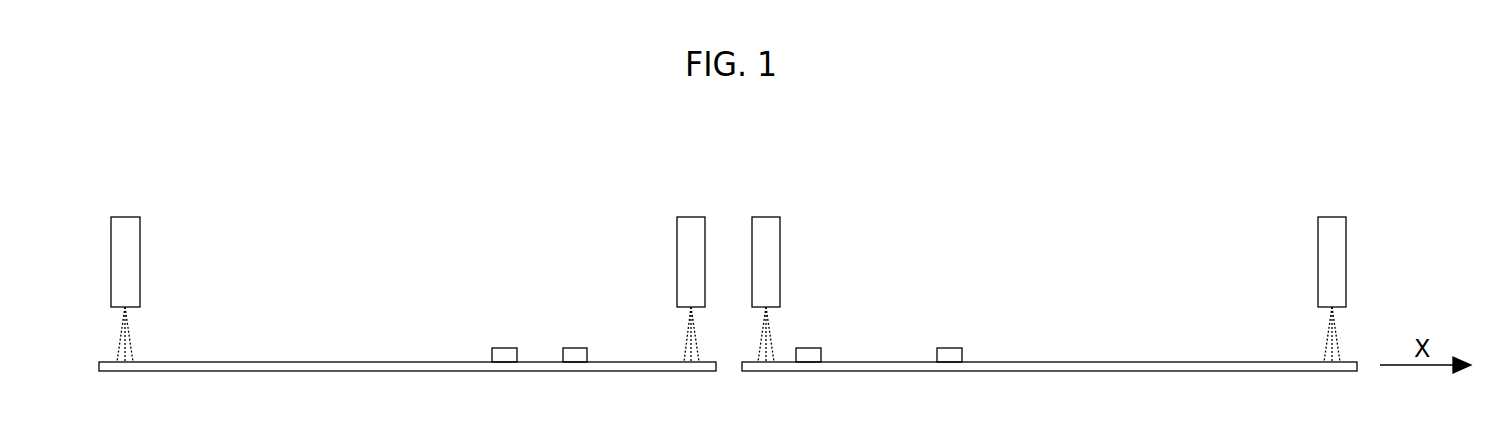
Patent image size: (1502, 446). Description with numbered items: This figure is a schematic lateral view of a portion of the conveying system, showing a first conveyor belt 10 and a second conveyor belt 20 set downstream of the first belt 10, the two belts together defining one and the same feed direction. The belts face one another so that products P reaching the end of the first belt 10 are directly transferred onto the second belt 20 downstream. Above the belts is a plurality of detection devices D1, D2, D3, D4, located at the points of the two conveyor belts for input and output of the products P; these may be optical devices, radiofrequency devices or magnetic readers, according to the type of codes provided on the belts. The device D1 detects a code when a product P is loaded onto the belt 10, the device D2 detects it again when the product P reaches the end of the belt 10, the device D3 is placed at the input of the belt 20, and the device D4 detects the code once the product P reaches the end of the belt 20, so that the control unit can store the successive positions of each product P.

The first conveyor belt 10 is at (401, 367).
The second conveyor belt 20 is at (1011, 367).
The detection device D1 is at (131, 266).
The detection device D2 is at (688, 246).
The detection device D3 is at (770, 257).
The detection device D4 is at (1333, 256).
The product P is at (580, 348).